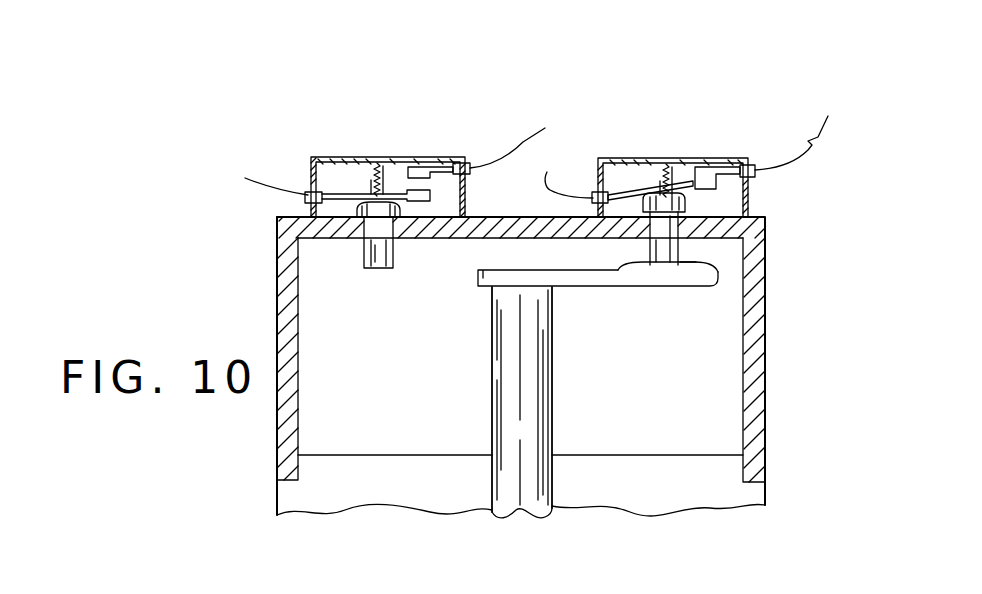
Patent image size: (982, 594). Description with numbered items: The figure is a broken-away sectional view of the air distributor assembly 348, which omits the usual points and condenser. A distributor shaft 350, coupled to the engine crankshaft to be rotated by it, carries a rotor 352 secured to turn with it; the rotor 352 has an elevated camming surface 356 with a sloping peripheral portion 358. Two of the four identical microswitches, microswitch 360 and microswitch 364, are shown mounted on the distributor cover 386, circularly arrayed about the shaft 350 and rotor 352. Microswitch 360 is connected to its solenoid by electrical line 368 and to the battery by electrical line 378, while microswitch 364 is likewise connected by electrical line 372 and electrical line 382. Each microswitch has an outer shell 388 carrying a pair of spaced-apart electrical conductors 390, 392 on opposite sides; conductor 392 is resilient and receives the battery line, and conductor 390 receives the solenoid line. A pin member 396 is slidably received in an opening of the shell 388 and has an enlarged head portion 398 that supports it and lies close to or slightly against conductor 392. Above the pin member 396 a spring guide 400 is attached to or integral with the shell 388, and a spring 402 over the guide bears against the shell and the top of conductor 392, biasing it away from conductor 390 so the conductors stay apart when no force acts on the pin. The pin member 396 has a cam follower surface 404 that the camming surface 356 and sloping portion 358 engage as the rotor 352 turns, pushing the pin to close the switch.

The air distributor assembly 348 is at (283, 128).
The distributor shaft 350 is at (528, 425).
The rotor 352 is at (630, 288).
The camming surface 356 is at (690, 262).
The sloping peripheral portion 358 is at (620, 265).
The microswitch 360 is at (335, 157).
The microswitch 364 is at (627, 160).
The electrical line 368 is at (498, 156).
The electrical line 372 is at (799, 136).
The electrical line 378 is at (251, 188).
The electrical line 382 is at (556, 186).
The distributor cover 386 is at (753, 348).
The outer shell 388 is at (402, 157).
The electrical conductor 390 is at (412, 168).
The electrical conductor 392 is at (430, 198).
The pin member 396 is at (380, 253).
The enlarged head portion 398 is at (377, 208).
The spring guide 400 is at (377, 157).
The spring 402 is at (372, 183).
The cam follower surface 404 is at (388, 272).